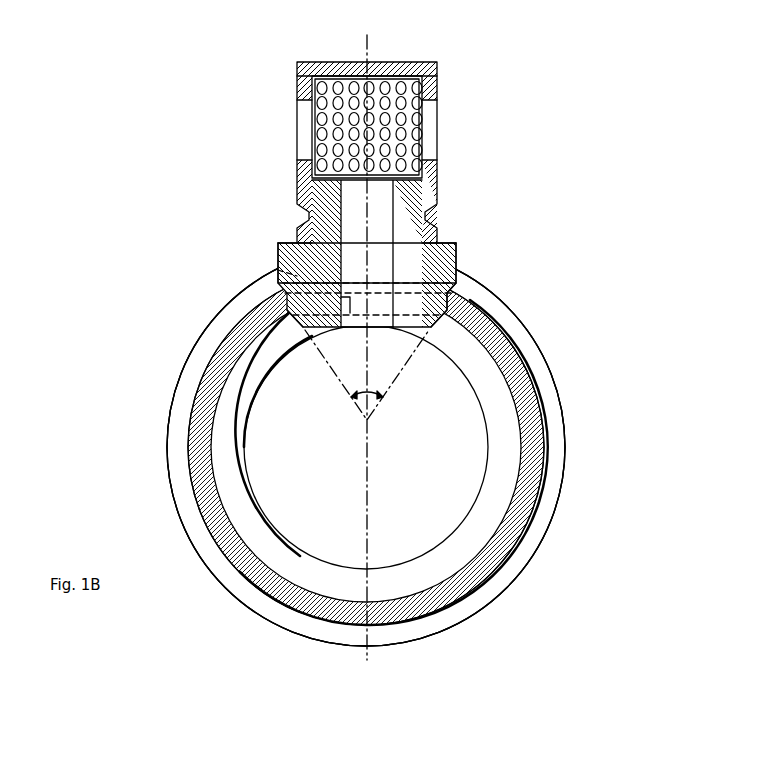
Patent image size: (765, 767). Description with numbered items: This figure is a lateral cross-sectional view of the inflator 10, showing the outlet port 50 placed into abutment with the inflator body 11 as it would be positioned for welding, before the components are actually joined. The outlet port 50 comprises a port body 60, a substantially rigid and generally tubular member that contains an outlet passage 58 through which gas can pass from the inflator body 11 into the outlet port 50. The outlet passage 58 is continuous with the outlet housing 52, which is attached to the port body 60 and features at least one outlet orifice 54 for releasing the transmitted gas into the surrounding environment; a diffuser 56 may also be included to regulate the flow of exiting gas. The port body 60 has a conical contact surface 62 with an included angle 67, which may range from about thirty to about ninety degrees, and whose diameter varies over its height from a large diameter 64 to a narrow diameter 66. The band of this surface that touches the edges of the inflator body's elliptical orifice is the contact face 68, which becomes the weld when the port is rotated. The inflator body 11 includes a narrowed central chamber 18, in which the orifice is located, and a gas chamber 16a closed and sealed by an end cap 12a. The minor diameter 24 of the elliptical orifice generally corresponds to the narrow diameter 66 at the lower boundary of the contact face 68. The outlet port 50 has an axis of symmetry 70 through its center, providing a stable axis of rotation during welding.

The inflator 10 is at (556, 585).
The inflator body 11 is at (548, 326).
The end cap 12a is at (331, 495).
The gas chamber 16a is at (542, 355).
The narrowed central chamber 18 is at (528, 502).
The minor diameter 24 is at (462, 303).
The outlet port 50 is at (470, 84).
The outlet housing 52 is at (431, 63).
The outlet orifice 54 is at (437, 132).
The diffuser 56 is at (303, 66).
The outlet passage 58 is at (311, 218).
The port body 60 is at (456, 243).
The conical contact surface 62 is at (456, 290).
The large diameter 64 is at (278, 270).
The narrow diameter 66 is at (313, 338).
The included angle 67 is at (372, 398).
The contact face 68 is at (363, 334).
The axis of symmetry 70 is at (369, 525).